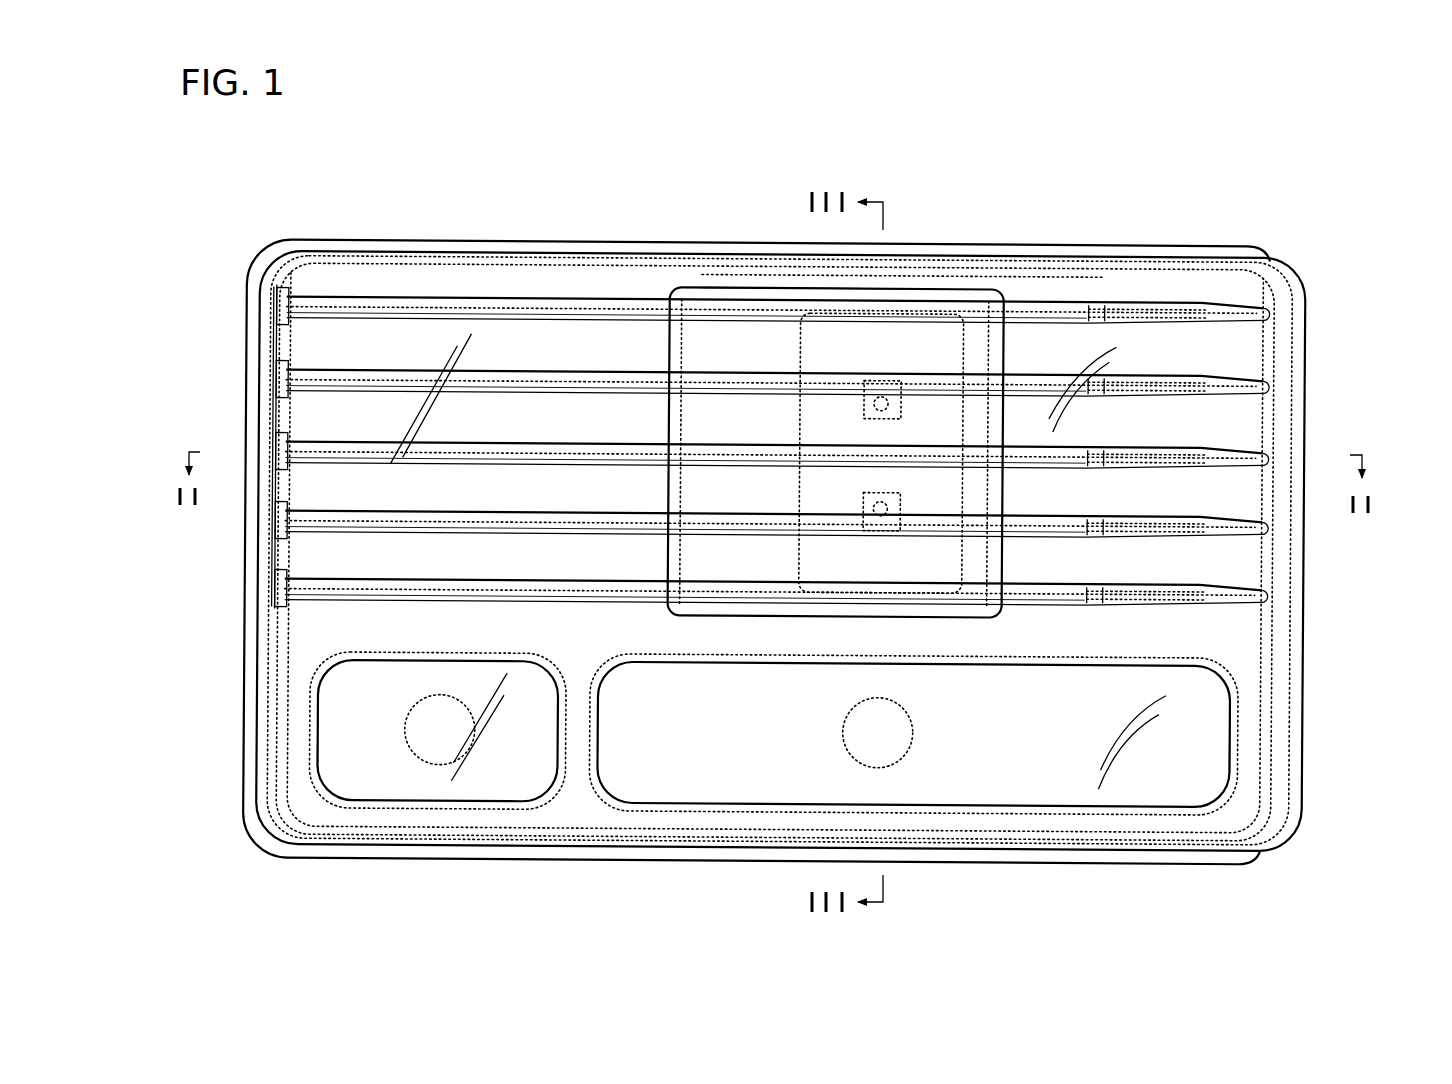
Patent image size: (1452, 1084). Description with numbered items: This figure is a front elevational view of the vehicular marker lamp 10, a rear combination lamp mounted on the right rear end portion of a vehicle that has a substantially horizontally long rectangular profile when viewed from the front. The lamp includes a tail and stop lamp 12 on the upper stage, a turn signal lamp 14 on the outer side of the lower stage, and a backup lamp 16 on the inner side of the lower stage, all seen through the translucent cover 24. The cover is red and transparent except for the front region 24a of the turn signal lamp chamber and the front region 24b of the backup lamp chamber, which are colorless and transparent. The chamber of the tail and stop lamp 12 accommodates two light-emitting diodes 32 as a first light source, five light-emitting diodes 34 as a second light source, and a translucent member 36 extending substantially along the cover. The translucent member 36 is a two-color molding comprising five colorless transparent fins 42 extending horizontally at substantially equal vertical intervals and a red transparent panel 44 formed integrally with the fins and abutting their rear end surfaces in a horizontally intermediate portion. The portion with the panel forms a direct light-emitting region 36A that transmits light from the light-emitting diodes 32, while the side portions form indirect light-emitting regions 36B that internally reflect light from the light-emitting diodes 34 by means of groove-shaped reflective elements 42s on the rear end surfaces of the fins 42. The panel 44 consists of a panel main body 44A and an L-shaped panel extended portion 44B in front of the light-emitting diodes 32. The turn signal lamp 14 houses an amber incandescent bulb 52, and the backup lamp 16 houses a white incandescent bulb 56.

The vehicular marker lamp 10 is at (1279, 234).
The tail and stop lamp 12 is at (1272, 342).
The turn signal lamp 14 is at (1017, 821).
The backup lamp 16 is at (399, 816).
The translucent cover 24 is at (1306, 619).
The front region of the turn signal lamp chamber 24a is at (1232, 745).
The front region of the backup lamp chamber 24b is at (318, 745).
The light-emitting diodes 32 is at (866, 411).
The light-emitting diodes 34 is at (292, 581).
The translucent member 36 is at (925, 278).
The direct light-emitting region 36A is at (736, 283).
The indirect light-emitting regions 36B is at (429, 295).
The fins 42 is at (502, 570).
The reflective elements 42s is at (570, 303).
The panel 44 is at (800, 290).
The panel main body 44A is at (703, 553).
The panel extended portion 44B is at (800, 563).
The incandescent bulb 52 is at (910, 699).
The incandescent bulb 56 is at (413, 690).